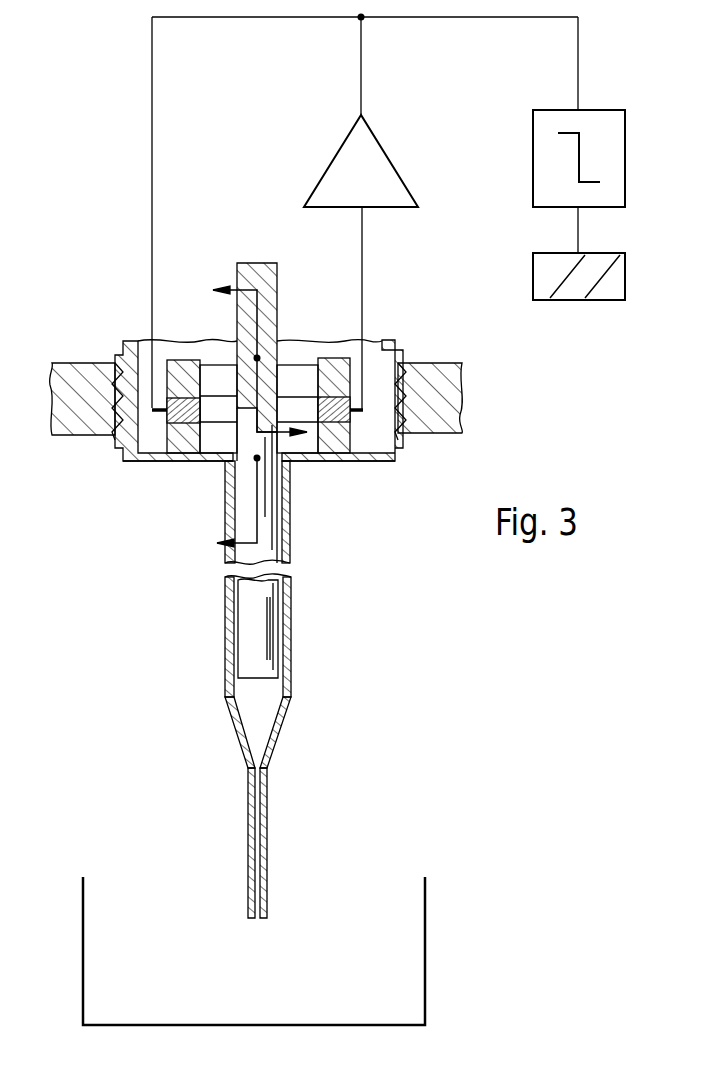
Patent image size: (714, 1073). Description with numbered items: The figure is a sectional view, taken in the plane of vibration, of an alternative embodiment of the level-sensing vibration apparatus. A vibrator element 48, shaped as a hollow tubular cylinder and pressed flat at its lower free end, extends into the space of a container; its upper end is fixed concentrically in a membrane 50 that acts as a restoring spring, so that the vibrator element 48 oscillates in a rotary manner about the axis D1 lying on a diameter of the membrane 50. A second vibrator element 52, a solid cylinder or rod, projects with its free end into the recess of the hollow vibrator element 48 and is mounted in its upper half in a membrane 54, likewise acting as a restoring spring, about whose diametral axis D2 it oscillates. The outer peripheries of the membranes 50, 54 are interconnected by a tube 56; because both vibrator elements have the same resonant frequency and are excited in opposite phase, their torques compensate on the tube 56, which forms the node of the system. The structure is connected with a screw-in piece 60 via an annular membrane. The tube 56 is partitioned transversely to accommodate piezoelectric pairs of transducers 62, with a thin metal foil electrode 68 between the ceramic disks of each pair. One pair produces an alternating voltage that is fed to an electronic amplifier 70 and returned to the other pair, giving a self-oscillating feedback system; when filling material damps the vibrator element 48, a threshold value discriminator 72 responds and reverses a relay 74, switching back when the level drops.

The vibrator element 48 is at (292, 612).
The membrane 50 is at (295, 460).
The second vibrator element 52 is at (260, 267).
The membrane 54 is at (310, 362).
The tube 56 is at (350, 378).
The screw-in piece 60 is at (398, 435).
The piezoelectric pair of transducers 62 is at (318, 417).
The electrode 68 is at (372, 462).
The electronic amplifier 70 is at (373, 163).
The threshold value discriminator 72 is at (625, 160).
The relay 74 is at (625, 275).
The axis D1 is at (257, 458).
The axis D2 is at (257, 358).